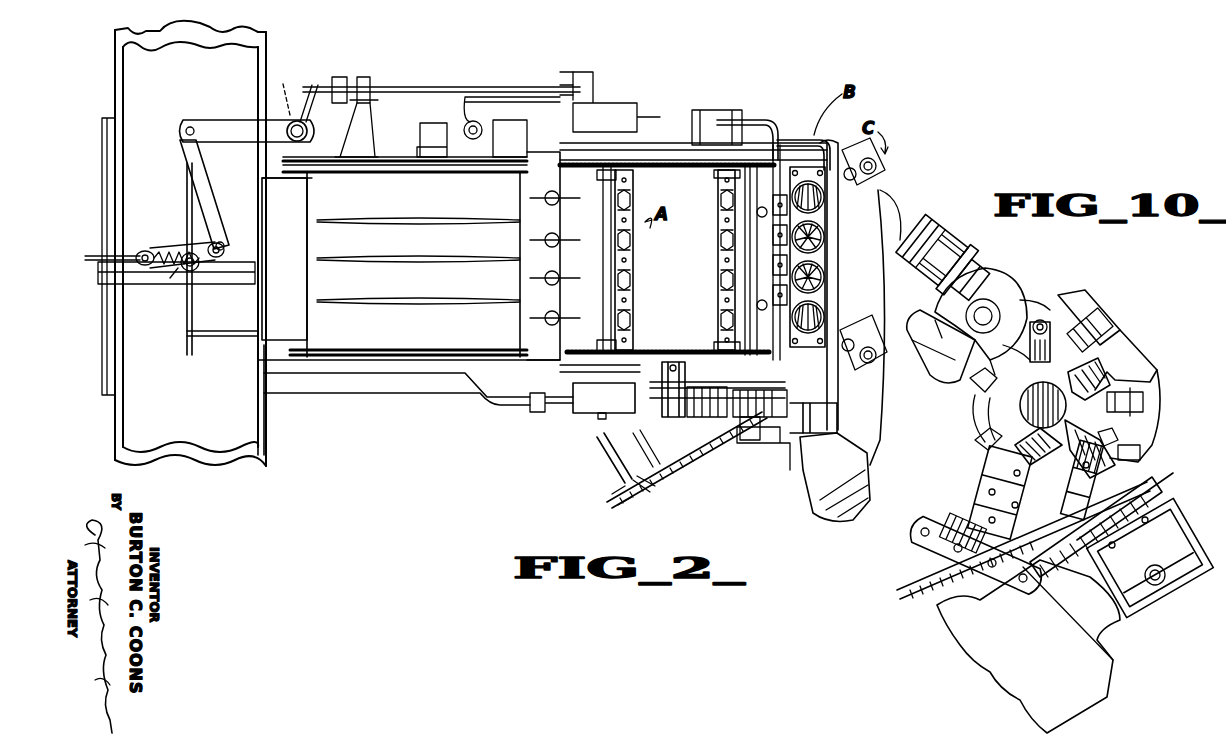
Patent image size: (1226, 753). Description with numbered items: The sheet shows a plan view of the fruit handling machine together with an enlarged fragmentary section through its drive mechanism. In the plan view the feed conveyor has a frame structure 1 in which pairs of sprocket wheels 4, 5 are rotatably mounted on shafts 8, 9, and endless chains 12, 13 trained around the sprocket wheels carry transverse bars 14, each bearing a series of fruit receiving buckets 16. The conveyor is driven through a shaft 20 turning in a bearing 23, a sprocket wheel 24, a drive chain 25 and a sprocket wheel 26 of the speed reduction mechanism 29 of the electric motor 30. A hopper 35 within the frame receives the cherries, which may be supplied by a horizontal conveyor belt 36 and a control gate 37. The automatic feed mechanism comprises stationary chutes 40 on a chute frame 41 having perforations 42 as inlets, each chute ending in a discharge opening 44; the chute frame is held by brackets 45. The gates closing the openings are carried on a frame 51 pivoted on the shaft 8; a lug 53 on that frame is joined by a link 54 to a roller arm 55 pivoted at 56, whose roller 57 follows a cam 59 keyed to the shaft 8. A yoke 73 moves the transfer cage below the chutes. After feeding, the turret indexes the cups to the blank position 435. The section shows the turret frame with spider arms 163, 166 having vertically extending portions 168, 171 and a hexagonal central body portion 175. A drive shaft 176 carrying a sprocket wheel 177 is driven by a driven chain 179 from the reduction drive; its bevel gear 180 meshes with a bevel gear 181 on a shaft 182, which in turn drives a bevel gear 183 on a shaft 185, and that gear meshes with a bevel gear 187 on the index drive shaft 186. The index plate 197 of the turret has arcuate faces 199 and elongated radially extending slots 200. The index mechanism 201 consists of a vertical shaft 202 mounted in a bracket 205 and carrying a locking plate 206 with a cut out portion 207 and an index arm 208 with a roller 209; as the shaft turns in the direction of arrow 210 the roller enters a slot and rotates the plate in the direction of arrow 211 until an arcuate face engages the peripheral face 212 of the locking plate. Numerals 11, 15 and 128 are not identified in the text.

In FIG. 2, the frame structure 1 is at (560, 392).
In FIG. 2, the sprocket wheels 4 is at (726, 183).
In FIG. 2, the sprocket wheels 5 is at (603, 175).
In FIG. 2, the shaft 8 is at (726, 296).
In FIG. 2, the shaft 9 is at (604, 313).
In FIG. 2, the machine 11 is at (900, 190).
In FIG. 2, the endless chain 12 is at (666, 352).
In FIG. 2, the endless chain 13 is at (700, 168).
In FIG. 2, the transverse bars 14 is at (718, 266).
In FIG. 2, the bracket strip 15 is at (805, 318).
In FIG. 2, the fruit receiving buckets 16 is at (720, 232).
In FIG. 2, the shaft 20 is at (645, 489).
In FIG. 2, the bearing 23 is at (616, 447).
In FIG. 2, the sprocket wheel 24 is at (618, 488).
In FIG. 2, the drive chain 25 is at (660, 470).
In FIG. 10, the drive chain 25 is at (928, 578).
In FIG. 10, the sprocket wheel 26 is at (1110, 440).
In FIG. 10, the speed reduction mechanism 29 is at (1172, 522).
In FIG. 2, the electric motor 30 is at (828, 495).
In FIG. 10, the electric motor 30 is at (1035, 656).
In FIG. 2, the hopper 35 is at (425, 251).
In FIG. 2, the horizontal conveyor belt 36 is at (140, 210).
In FIG. 2, the control gate 37 is at (186, 294).
In FIG. 2, the chutes 40 is at (818, 203).
In FIG. 2, the chute frame 41 is at (822, 245).
In FIG. 2, the perforations 42 is at (785, 175).
In FIG. 2, the discharge opening 44 is at (820, 230).
In FIG. 2, the brackets 45 is at (783, 135).
In FIG. 2, the frame 51 is at (828, 140).
In FIG. 2, the lug 53 is at (812, 440).
In FIG. 2, the link 54 is at (830, 426).
In FIG. 2, the roller arm 55 is at (700, 404).
In FIG. 2, the pivot 56 is at (672, 418).
In FIG. 2, the roller 57 is at (718, 404).
In FIG. 2, the cam 59 is at (738, 425).
In FIG. 2, the yoke 73 is at (745, 120).
In FIG. 2, the bracket 128 is at (758, 432).
In FIG. 10, the spider arm 163 is at (1080, 505).
In FIG. 10, the spider arm 166 is at (928, 290).
In FIG. 10, the vertically extending portion 168 is at (1095, 523).
In FIG. 10, the vertically extending portion 171 is at (950, 228).
In FIG. 10, the hexagonal central body portion 175 is at (1140, 430).
In FIG. 10, the drive shaft 176 is at (1117, 463).
In FIG. 10, the sprocket wheel 177 is at (1075, 535).
In FIG. 10, the driven chain 179 is at (1150, 488).
In FIG. 10, the bevel gear 180 is at (1130, 452).
In FIG. 10, the bevel gear 181 is at (1108, 382).
In FIG. 10, the shaft 182 is at (1140, 398).
In FIG. 10, the bevel gear 183 is at (1115, 340).
In FIG. 10, the shaft 185 is at (1092, 322).
In FIG. 10, the index drive shaft 186 is at (935, 222).
In FIG. 10, the bevel gear 187 is at (975, 388).
In FIG. 10, the index plate 197 is at (975, 438).
In FIG. 10, the arcuate faces 199 is at (970, 422).
In FIG. 10, the elongated radially extending slots 200 is at (1010, 360).
In FIG. 10, the index mechanism 201 is at (993, 260).
In FIG. 10, the vertical shaft 202 is at (985, 305).
In FIG. 10, the bracket 205 is at (930, 370).
In FIG. 10, the locking plate 206 is at (990, 285).
In FIG. 10, the cut out portion 207 is at (1022, 300).
In FIG. 10, the index arm 208 is at (1010, 340).
In FIG. 10, the roller 209 is at (1068, 303).
In FIG. 10, the arrow 210 is at (963, 310).
In FIG. 10, the arrow 211 is at (988, 405).
In FIG. 10, the peripheral face 212 is at (965, 375).
In FIG. 2, the blank position 435 is at (855, 145).